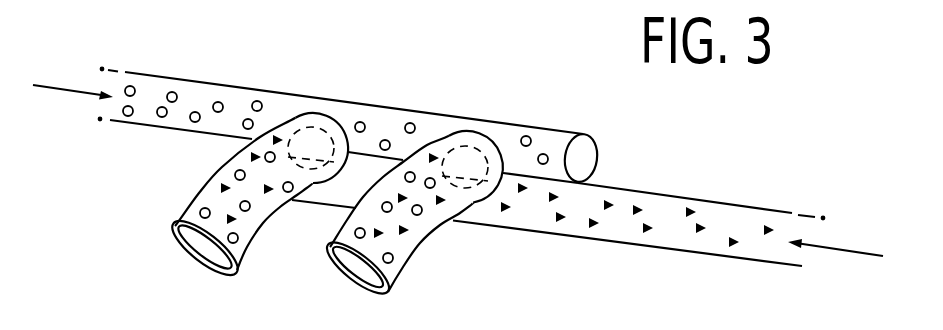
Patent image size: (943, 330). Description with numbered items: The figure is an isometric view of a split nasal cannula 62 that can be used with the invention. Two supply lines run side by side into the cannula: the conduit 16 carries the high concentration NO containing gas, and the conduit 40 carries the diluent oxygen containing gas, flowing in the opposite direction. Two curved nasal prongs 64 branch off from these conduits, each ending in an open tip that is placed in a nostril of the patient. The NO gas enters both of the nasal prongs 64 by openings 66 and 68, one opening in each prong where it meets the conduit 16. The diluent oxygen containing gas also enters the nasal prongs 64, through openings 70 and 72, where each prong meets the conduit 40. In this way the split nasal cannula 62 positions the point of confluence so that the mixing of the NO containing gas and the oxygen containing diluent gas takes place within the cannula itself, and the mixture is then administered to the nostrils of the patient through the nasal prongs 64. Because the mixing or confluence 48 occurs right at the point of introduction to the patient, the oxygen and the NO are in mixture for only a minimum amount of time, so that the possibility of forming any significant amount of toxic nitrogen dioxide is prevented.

The conduit 16 is at (316, 101).
The conduit 40 is at (722, 208).
The confluence 48 is at (271, 145).
The split nasal cannula 62 is at (382, 105).
The nasal prongs 64 is at (197, 191).
The opening 66 is at (315, 128).
The opening 68 is at (458, 147).
The opening 70 is at (310, 170).
The opening 72 is at (468, 190).